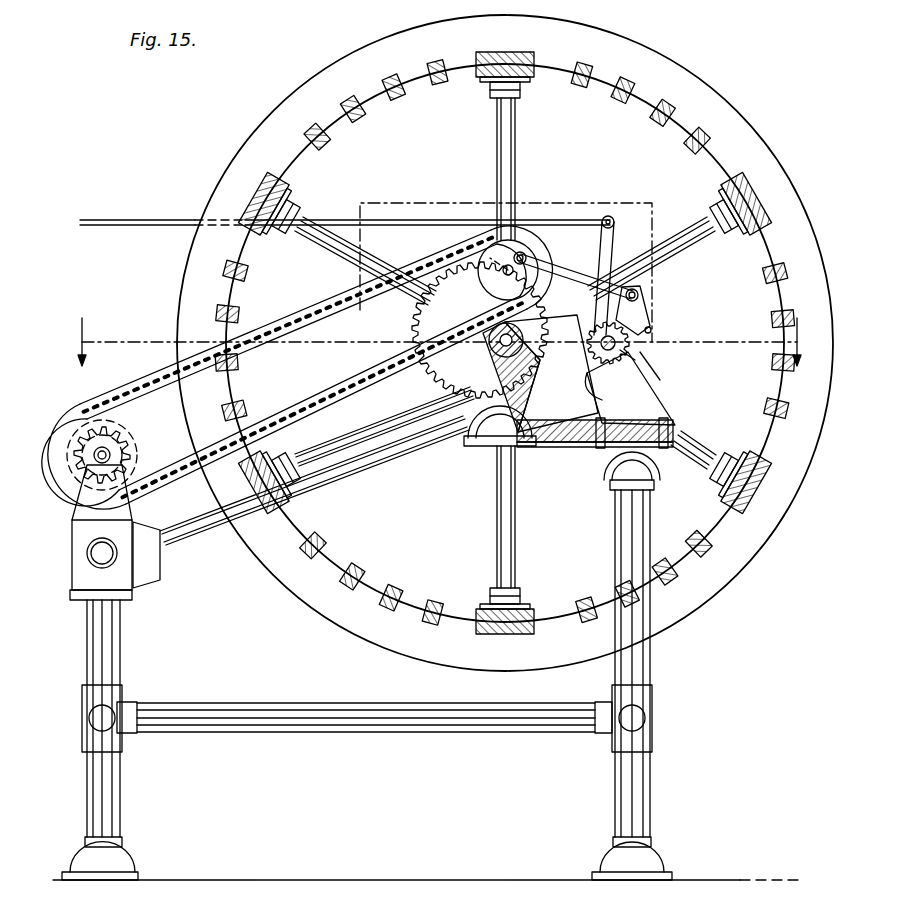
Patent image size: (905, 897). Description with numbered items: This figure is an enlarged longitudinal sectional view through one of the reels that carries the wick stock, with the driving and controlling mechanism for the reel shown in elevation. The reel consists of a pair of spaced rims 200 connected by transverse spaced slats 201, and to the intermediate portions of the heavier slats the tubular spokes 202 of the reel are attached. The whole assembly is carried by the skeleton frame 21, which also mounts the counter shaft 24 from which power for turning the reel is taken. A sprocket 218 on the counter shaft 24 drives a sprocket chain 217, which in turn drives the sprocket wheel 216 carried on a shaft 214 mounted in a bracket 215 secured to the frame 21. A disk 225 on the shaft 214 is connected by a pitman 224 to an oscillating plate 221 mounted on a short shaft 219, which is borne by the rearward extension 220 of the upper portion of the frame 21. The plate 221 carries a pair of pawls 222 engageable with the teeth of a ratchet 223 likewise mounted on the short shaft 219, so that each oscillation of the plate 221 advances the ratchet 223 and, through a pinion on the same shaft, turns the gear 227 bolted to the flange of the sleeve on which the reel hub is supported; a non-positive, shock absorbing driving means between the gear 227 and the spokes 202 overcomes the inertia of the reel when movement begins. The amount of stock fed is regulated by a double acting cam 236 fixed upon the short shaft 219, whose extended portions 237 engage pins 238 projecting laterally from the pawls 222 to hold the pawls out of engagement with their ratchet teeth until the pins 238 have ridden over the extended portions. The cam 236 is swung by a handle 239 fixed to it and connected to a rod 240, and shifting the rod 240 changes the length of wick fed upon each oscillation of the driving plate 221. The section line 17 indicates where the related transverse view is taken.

The rims 200 is at (505, 343).
The slats 201 is at (590, 78).
The tubular spokes 202 is at (516, 165).
The rod 240 is at (158, 220).
The section line 17- 17 is at (438, 342).
The shaft 214 is at (490, 255).
The disk 225 is at (512, 250).
The pitman 224 is at (565, 272).
The handle 239 is at (610, 262).
The sprocket wheel 216 is at (470, 300).
The bracket 215 is at (514, 323).
The gear 227 is at (490, 350).
The oscillating plate 221 is at (642, 305).
The pins 238 is at (590, 348).
The pawls 222 is at (650, 333).
The short shaft 219 is at (626, 350).
The double acting cam 236 is at (632, 365).
The extended portions 237 is at (590, 385).
The ratchet 223 is at (660, 395).
The rearward extension 220 is at (655, 408).
The sprocket chain 217 is at (140, 390).
The sprocket 218 is at (172, 410).
The counter shaft 24 is at (130, 455).
The skeleton frame 21 is at (318, 724).